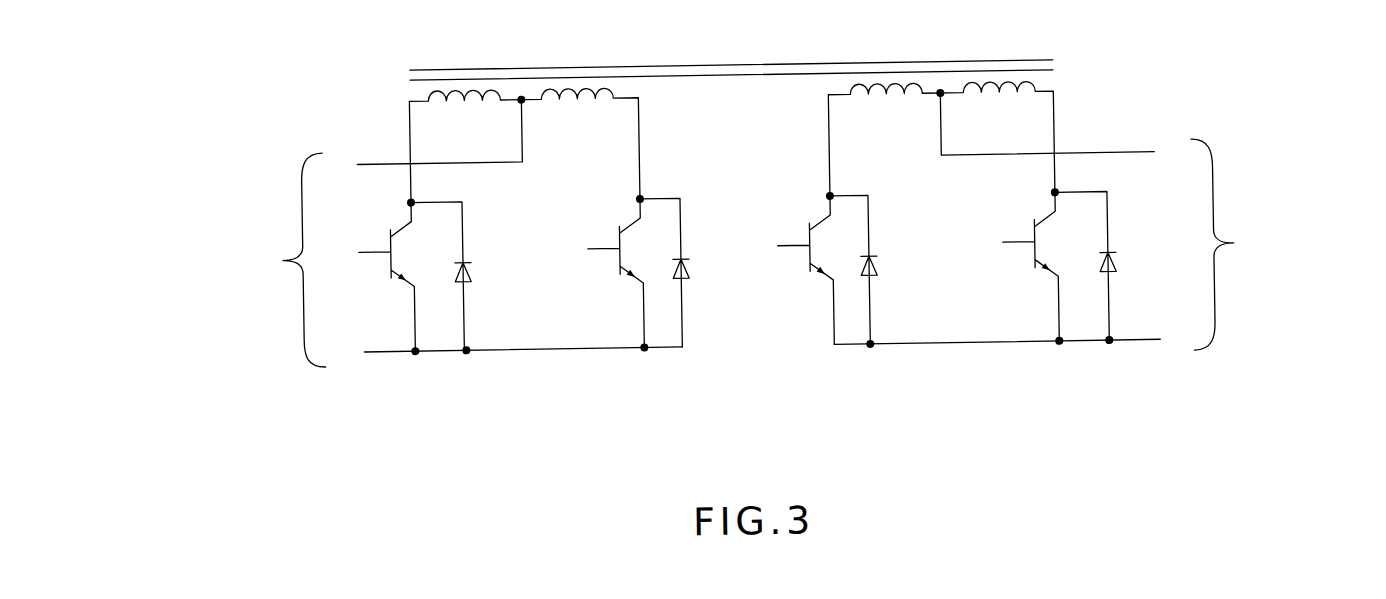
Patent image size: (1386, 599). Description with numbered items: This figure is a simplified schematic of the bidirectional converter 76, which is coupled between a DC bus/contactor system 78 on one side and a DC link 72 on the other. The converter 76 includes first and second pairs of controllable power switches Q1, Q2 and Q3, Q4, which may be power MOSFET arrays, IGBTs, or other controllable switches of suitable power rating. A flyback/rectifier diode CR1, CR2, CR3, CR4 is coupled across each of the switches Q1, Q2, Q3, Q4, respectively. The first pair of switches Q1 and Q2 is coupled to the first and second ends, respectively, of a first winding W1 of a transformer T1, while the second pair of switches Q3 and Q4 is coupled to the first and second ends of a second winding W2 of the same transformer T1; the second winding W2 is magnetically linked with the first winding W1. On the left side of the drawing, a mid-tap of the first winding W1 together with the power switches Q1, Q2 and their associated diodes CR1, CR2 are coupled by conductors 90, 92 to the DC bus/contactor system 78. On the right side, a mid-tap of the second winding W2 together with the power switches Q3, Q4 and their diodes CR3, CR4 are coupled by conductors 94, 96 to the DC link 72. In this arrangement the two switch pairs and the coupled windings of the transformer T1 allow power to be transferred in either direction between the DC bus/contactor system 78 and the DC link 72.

The bidirectional converter 76 is at (815, 392).
The transformer T1 is at (696, 65).
The first winding W1 is at (488, 98).
The second winding W2 is at (978, 98).
The controllable power switch Q1 is at (410, 217).
The controllable power switch Q2 is at (620, 221).
The controllable power switch Q3 is at (827, 207).
The controllable power switch Q4 is at (1047, 220).
The flyback/rectifier diode CR1 is at (463, 283).
The flyback/rectifier diode CR2 is at (683, 257).
The flyback/rectifier diode CR3 is at (869, 281).
The flyback/rectifier diode CR4 is at (1143, 247).
The conductor 90 is at (397, 157).
The conductor 92 is at (377, 347).
The conductor 94 is at (1112, 159).
The conductor 96 is at (1133, 347).
The DC bus/contactor system 78 is at (206, 262).
The DC link 72 is at (1286, 243).